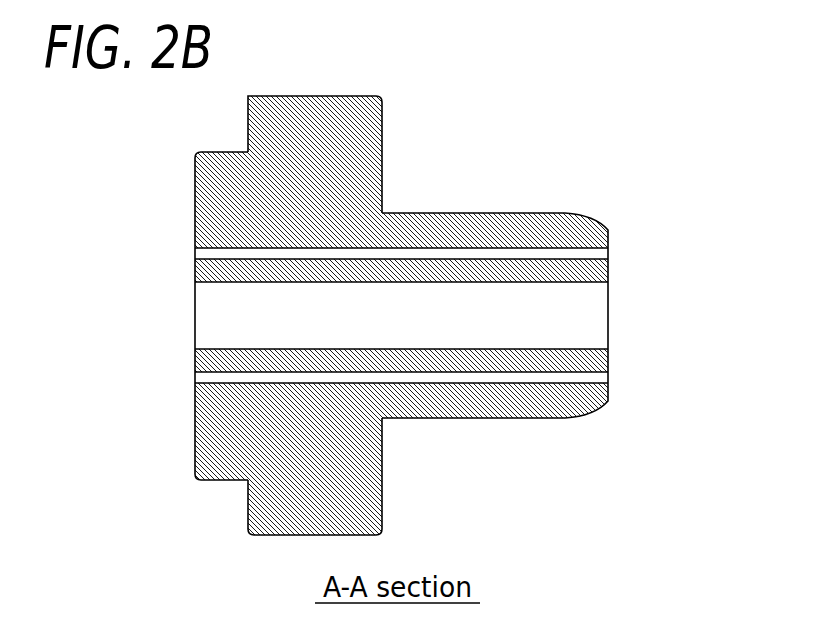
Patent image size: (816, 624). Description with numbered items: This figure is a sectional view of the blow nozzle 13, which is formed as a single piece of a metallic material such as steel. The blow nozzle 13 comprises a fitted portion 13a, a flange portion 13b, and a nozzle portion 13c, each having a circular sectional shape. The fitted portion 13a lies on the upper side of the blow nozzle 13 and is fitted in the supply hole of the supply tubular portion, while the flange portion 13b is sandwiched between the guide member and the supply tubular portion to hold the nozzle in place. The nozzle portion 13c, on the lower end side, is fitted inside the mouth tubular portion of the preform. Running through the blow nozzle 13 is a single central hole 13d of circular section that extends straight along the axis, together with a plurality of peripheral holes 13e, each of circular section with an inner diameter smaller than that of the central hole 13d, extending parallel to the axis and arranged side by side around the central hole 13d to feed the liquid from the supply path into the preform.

The blow nozzle 13 is at (442, 137).
The fitted portion 13a is at (208, 200).
The flange portion 13b is at (323, 118).
The nozzle portion 13c is at (553, 228).
The central hole 13d is at (597, 315).
The peripheral hole 13e is at (597, 253).